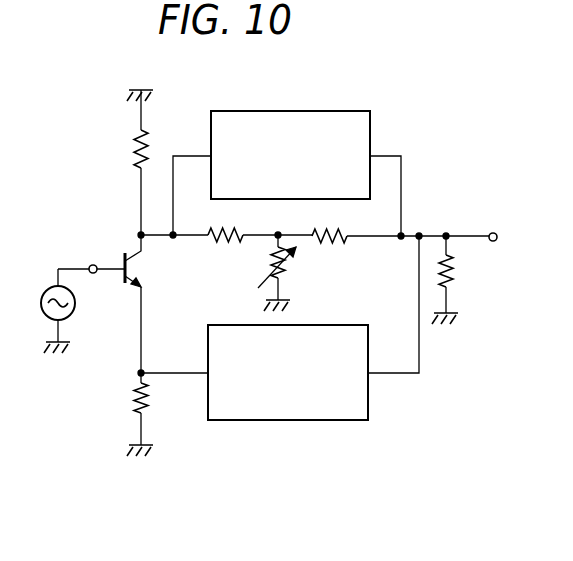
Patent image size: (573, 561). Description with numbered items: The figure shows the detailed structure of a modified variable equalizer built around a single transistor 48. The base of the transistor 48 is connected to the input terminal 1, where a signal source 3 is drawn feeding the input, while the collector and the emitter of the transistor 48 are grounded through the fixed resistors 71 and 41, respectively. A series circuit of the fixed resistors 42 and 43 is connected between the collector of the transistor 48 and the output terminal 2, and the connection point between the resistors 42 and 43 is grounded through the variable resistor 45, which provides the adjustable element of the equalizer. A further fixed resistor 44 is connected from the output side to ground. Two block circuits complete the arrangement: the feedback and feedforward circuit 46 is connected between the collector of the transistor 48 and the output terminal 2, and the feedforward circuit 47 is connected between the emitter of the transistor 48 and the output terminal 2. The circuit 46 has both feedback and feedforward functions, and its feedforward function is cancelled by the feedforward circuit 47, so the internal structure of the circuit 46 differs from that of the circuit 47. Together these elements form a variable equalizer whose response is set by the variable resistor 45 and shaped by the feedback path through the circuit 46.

The input terminal 1 is at (93, 274).
The output terminal 2 is at (497, 237).
The signal source 3 is at (41, 301).
The fixed resistor 41 is at (132, 390).
The fixed resistor 42 is at (223, 245).
The fixed resistor 43 is at (348, 233).
The fixed resistor 44 is at (455, 262).
The variable resistor 45 is at (286, 276).
The feedback and feedforward circuit 46 is at (369, 111).
The feedforward circuit 47 is at (208, 350).
The transistor 48 is at (135, 258).
The fixed resistor 71 is at (135, 149).